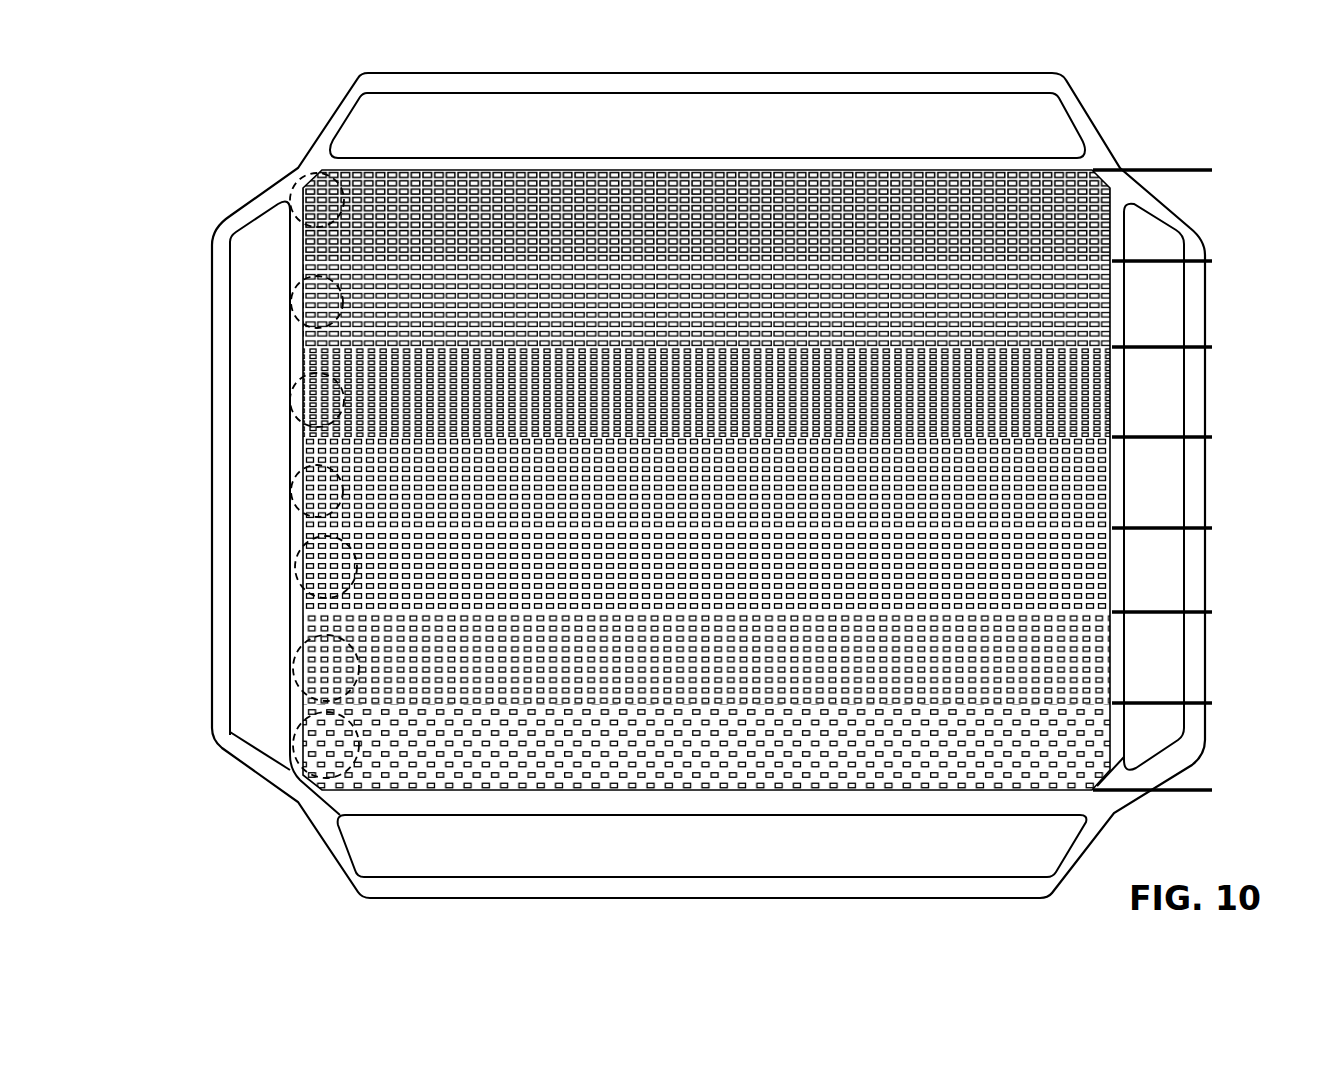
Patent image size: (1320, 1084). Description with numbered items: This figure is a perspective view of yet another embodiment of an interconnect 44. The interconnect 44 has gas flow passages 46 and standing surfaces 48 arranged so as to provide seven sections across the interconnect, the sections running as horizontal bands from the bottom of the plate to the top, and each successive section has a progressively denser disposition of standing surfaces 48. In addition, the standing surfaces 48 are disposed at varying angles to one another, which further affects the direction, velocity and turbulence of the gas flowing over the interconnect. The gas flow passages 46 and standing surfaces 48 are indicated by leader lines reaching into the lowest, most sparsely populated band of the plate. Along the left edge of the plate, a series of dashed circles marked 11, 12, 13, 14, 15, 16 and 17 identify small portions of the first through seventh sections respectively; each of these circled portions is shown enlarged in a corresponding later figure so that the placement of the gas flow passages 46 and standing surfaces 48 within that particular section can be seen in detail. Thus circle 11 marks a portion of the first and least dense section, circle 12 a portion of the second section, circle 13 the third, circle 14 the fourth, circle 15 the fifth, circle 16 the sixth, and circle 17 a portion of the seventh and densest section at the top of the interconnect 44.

The interconnect 44 is at (290, 115).
The hole region 11 is at (296, 766).
The hole region 12 is at (298, 693).
The hole region 13 is at (296, 591).
The hole region 14 is at (291, 470).
The hole region 15 is at (292, 382).
The hole region 16 is at (291, 282).
The hole region 17 is at (296, 183).
The gas flow passages 46 is at (445, 713).
The standing surfaces 48 is at (478, 740).